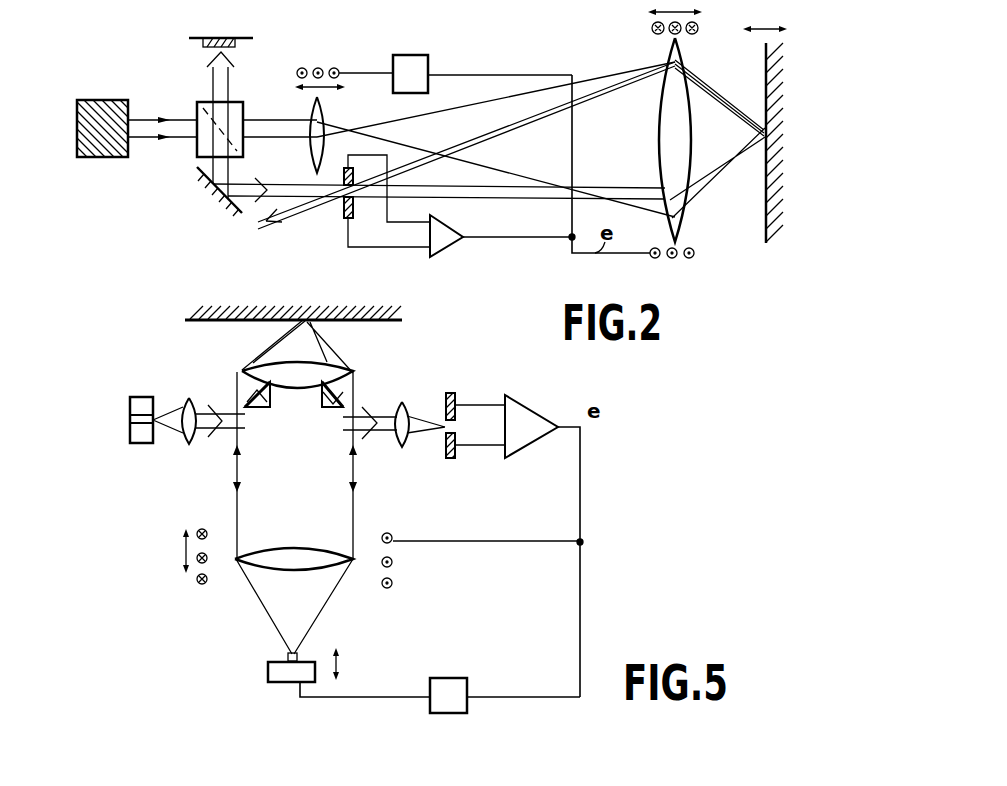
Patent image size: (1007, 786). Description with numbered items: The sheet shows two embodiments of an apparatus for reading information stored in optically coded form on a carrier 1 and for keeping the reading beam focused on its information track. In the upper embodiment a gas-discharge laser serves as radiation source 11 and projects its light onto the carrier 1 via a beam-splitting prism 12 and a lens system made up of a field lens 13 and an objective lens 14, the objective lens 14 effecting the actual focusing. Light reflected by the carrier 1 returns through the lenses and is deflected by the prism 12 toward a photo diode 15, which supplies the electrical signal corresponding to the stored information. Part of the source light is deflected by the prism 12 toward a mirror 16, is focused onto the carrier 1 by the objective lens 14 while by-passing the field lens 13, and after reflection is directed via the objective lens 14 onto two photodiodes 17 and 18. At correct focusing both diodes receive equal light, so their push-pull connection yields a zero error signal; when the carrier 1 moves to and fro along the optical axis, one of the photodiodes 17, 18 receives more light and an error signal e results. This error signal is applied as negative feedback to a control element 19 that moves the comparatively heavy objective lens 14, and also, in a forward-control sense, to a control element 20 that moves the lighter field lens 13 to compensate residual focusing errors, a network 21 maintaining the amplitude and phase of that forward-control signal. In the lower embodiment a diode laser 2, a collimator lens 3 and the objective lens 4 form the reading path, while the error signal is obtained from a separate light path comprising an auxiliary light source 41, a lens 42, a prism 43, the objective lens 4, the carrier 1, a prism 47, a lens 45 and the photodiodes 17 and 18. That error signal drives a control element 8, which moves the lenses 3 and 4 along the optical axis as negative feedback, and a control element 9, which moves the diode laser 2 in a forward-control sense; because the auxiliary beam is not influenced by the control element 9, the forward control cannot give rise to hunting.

In FIG. 2, the carrier 1 is at (766, 68).
In FIG. 5, the carrier 1 is at (404, 316).
In FIG. 5, the diode laser 2 is at (299, 655).
In FIG. 5, the collimator lens 3 is at (235, 562).
In FIG. 5, the objective lens 4 is at (244, 368).
In FIG. 5, the control element 8 is at (197, 582).
In FIG. 5, the control element 9 is at (268, 673).
In FIG. 2, the radiation source 11 is at (103, 157).
In FIG. 2, the beam-splitting prism 12 is at (240, 103).
In FIG. 2, the field lens 13 is at (323, 112).
In FIG. 2, the objective lens 14 is at (661, 116).
In FIG. 2, the photo diode 15 is at (203, 41).
In FIG. 2, the mirror 16 is at (234, 214).
In FIG. 2, the photodiode 17 is at (344, 173).
In FIG. 5, the photodiode 17 is at (456, 451).
In FIG. 2, the photodiode 18 is at (344, 212).
In FIG. 5, the photodiode 18 is at (456, 400).
In FIG. 2, the control element 19 is at (675, 258).
In FIG. 2, the control element 20 is at (302, 68).
In FIG. 2, the network 21 is at (428, 60).
In FIG. 5, the network 21 is at (452, 678).
In FIG. 5, the auxiliary light source 41 is at (136, 397).
In FIG. 5, the lens 42 is at (187, 398).
In FIG. 5, the prism 43 is at (259, 409).
In FIG. 5, the lens 45 is at (402, 447).
In FIG. 5, the prism 47 is at (330, 409).